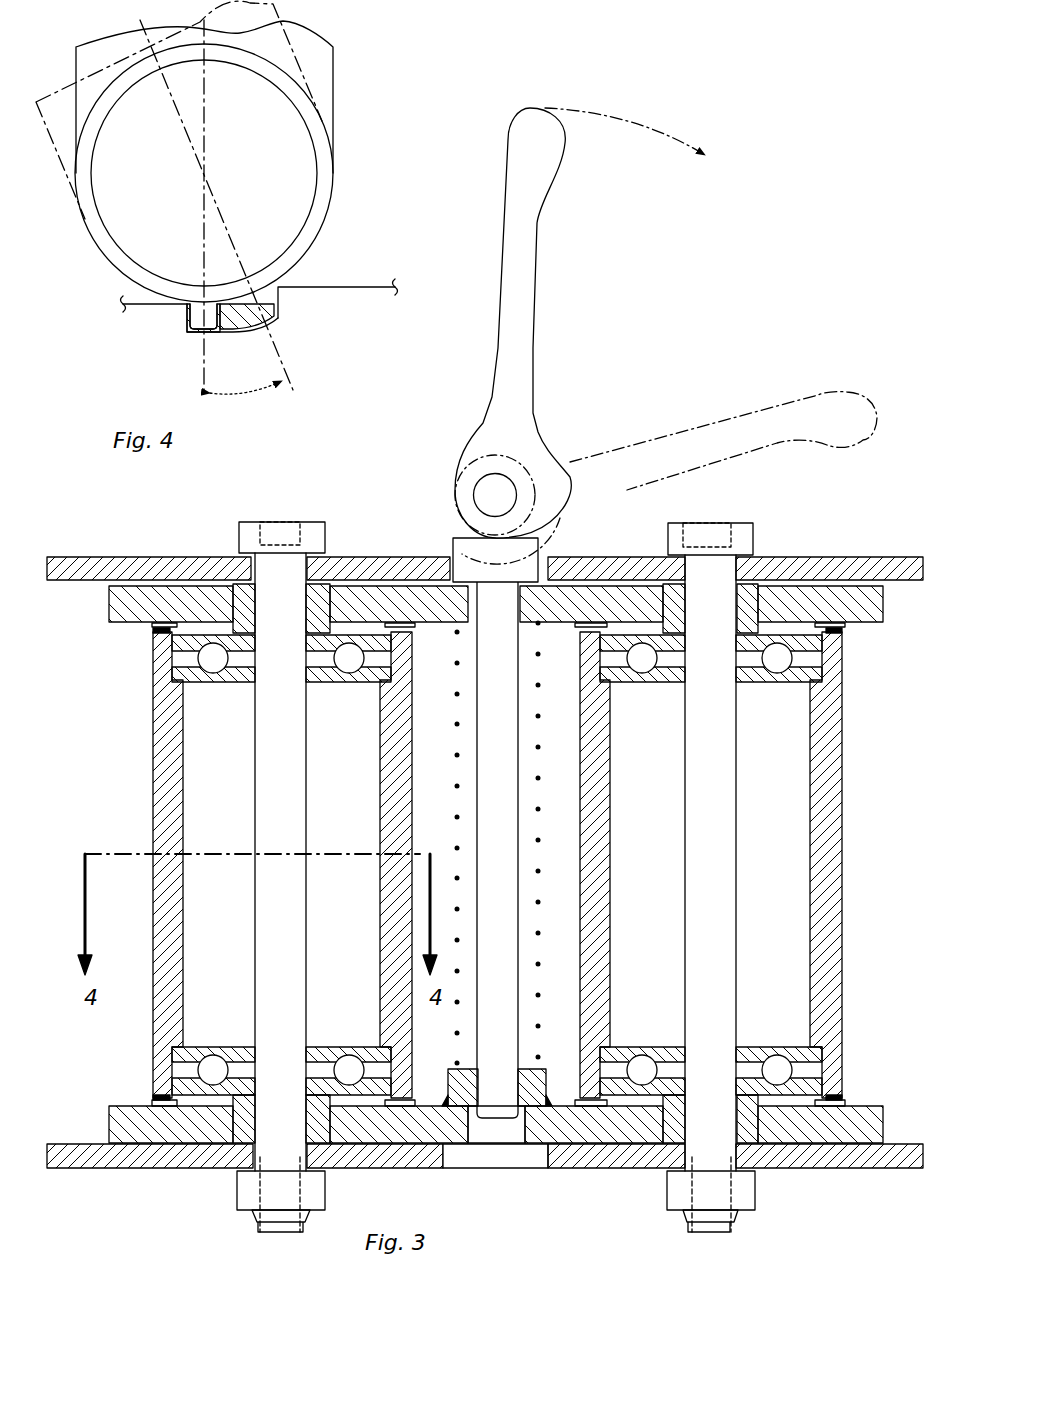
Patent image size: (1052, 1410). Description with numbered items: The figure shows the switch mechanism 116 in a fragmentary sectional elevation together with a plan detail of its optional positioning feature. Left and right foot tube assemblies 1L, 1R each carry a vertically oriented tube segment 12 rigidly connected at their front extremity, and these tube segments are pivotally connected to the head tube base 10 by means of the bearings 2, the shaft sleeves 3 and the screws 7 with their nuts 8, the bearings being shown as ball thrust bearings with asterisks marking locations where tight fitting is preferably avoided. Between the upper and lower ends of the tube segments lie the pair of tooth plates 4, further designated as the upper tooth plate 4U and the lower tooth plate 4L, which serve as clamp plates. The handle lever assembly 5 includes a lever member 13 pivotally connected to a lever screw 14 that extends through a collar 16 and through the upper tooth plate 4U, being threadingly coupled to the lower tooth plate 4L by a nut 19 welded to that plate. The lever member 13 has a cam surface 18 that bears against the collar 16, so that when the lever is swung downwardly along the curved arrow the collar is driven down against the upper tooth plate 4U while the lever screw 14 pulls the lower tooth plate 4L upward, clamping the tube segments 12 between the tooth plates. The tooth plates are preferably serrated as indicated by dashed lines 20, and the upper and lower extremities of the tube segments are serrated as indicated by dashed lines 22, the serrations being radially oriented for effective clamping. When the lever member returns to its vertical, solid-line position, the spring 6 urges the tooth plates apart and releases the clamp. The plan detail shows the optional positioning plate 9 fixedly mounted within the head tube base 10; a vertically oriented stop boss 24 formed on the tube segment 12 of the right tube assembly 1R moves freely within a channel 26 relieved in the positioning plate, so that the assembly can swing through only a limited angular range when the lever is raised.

In FIG. 3, the right foot tube assembly 1R is at (124, 766).
In FIG. 4, the right foot tube assembly 1R is at (362, 108).
In FIG. 3, the left foot tube assembly 1L is at (868, 782).
In FIG. 3, the bearings 2 is at (312, 682).
In FIG. 3, the shaft sleeves 3 is at (495, 863).
In FIG. 3, the tooth plates 4 is at (496, 864).
In FIG. 3, the upper tooth plate 4U is at (883, 605).
In FIG. 3, the lower tooth plate 4L is at (883, 1125).
In FIG. 3, the handle lever assembly 5 is at (552, 405).
In FIG. 3, the spring 6 is at (567, 643).
In FIG. 3, the screws 7 is at (250, 522).
In FIG. 3, the nuts 8 is at (325, 1198).
In FIG. 4, the positioning plate 9 is at (334, 287).
In FIG. 3, the head tube base 10 is at (165, 557).
In FIG. 3, the tube segment 12 is at (152, 782).
In FIG. 4, the tube segment 12 is at (331, 230).
In FIG. 3, the lever member 13 is at (537, 292).
In FIG. 3, the lever screw 14 is at (518, 728).
In FIG. 3, the collar 16 is at (453, 550).
In FIG. 3, the cam surface 18 is at (560, 520).
In FIG. 3, the nut 19 is at (523, 1067).
In FIG. 3, the serrations of tooth plates 20 is at (152, 626).
In FIG. 3, the serrations of tube segments 22 is at (155, 633).
In FIG. 4, the stop boss 24 is at (233, 333).
In FIG. 4, the channel 26 is at (257, 327).
In FIG. 3, the switch mechanism 116 is at (593, 1230).